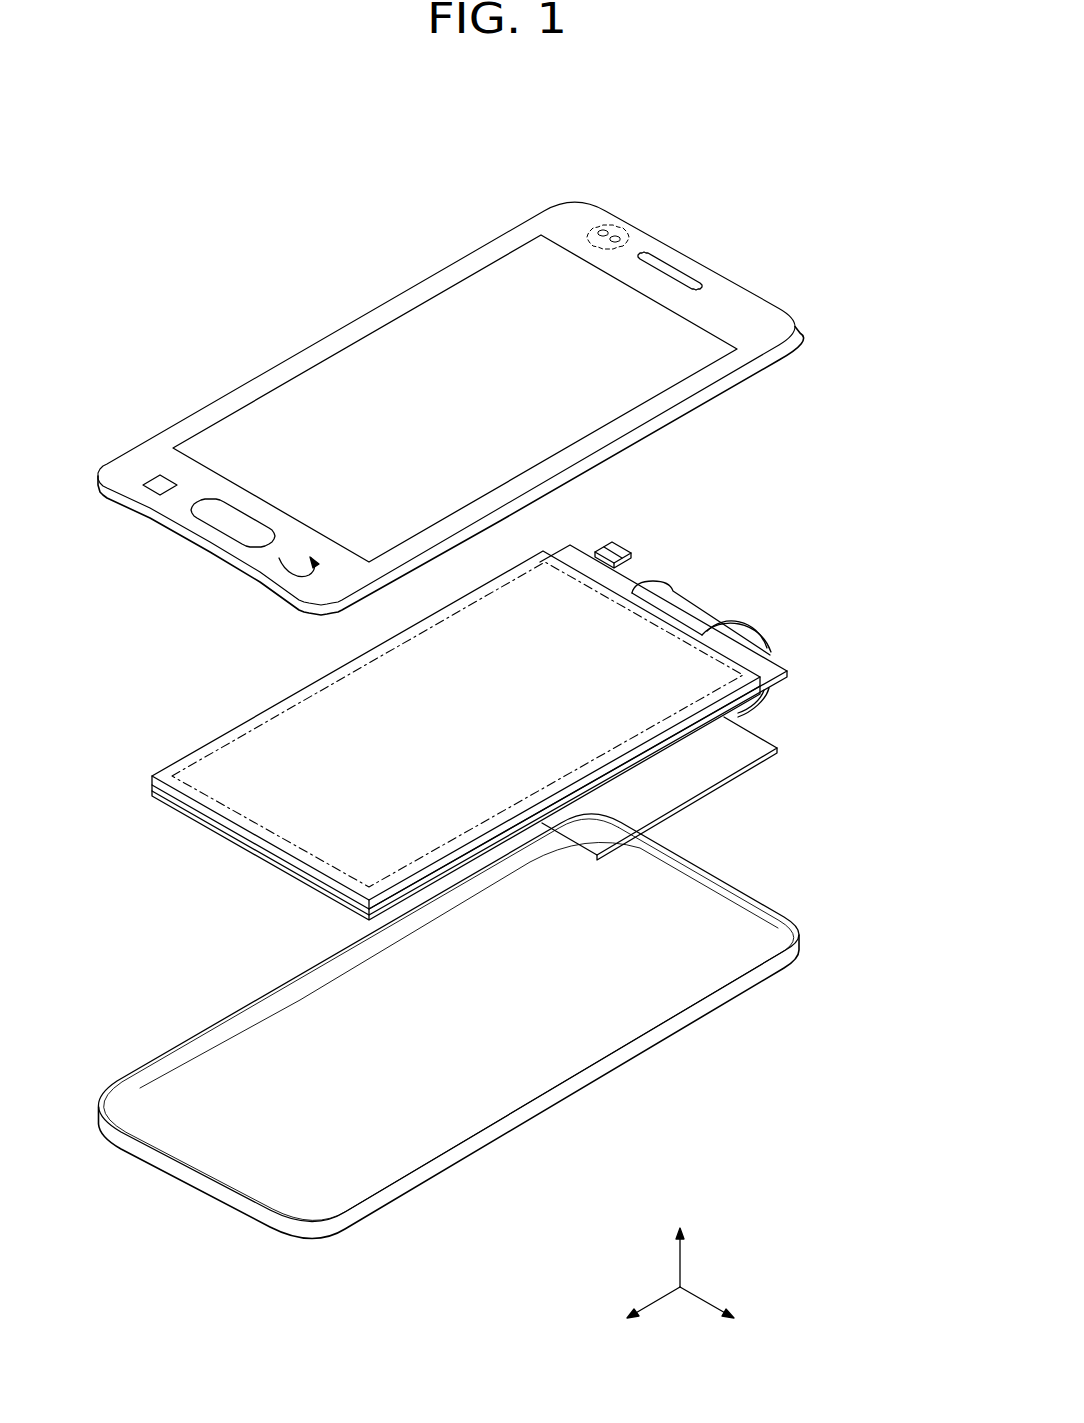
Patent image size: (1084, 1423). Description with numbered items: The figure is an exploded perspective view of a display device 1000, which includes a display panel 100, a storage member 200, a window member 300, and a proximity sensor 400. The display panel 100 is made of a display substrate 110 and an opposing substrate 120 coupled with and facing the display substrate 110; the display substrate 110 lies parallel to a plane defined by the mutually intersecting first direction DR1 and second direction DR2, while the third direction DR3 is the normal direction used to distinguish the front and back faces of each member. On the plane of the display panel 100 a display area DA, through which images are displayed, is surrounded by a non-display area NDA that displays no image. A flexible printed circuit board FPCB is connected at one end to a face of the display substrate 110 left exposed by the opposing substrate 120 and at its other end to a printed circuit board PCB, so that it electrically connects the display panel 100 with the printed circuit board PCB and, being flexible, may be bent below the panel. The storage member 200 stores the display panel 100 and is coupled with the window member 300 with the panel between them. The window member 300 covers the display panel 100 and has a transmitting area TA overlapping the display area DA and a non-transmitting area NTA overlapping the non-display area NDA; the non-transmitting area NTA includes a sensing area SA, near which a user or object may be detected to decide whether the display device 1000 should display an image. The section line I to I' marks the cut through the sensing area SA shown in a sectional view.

The display device 1000 is at (290, 213).
The window member 300 is at (505, 382).
The transmitting area TA is at (431, 322).
The non-transmitting area NTA is at (697, 302).
The sensing area SA is at (614, 227).
The section line I is at (559, 244).
The section line I' is at (604, 271).
The proximity sensor 400 is at (618, 532).
The display panel 100 is at (527, 732).
The display substrate 110 is at (776, 684).
The opposing substrate 120 is at (700, 720).
The display area DA is at (289, 742).
The non-display area NDA is at (218, 743).
The flexible printed circuit board FPCB is at (688, 605).
The printed circuit board PCB is at (682, 782).
The storage member 200 is at (817, 949).
The first direction DR1 is at (729, 1312).
The second direction DR2 is at (632, 1312).
The third direction DR3 is at (678, 1244).